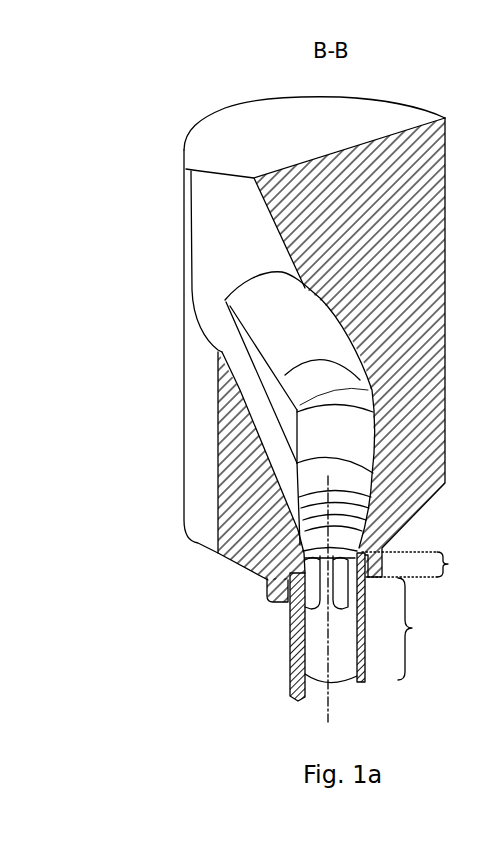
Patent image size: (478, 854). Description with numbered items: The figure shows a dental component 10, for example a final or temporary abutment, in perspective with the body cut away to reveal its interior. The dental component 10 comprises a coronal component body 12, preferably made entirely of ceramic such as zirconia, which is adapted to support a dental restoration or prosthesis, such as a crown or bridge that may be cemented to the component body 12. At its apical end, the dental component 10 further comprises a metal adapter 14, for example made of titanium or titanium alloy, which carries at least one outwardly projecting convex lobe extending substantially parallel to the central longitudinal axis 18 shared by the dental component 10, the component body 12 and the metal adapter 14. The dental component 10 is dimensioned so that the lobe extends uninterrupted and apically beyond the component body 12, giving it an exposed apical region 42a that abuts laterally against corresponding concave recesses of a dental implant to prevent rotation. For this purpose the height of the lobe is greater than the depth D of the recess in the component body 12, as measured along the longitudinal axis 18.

The dental component 10 is at (158, 359).
The component body 12 is at (195, 437).
The metal adapter 14 is at (287, 638).
The longitudinal axis 18 is at (330, 697).
The exposed apical region 42a is at (431, 629).
The depth of the recess D is at (414, 564).